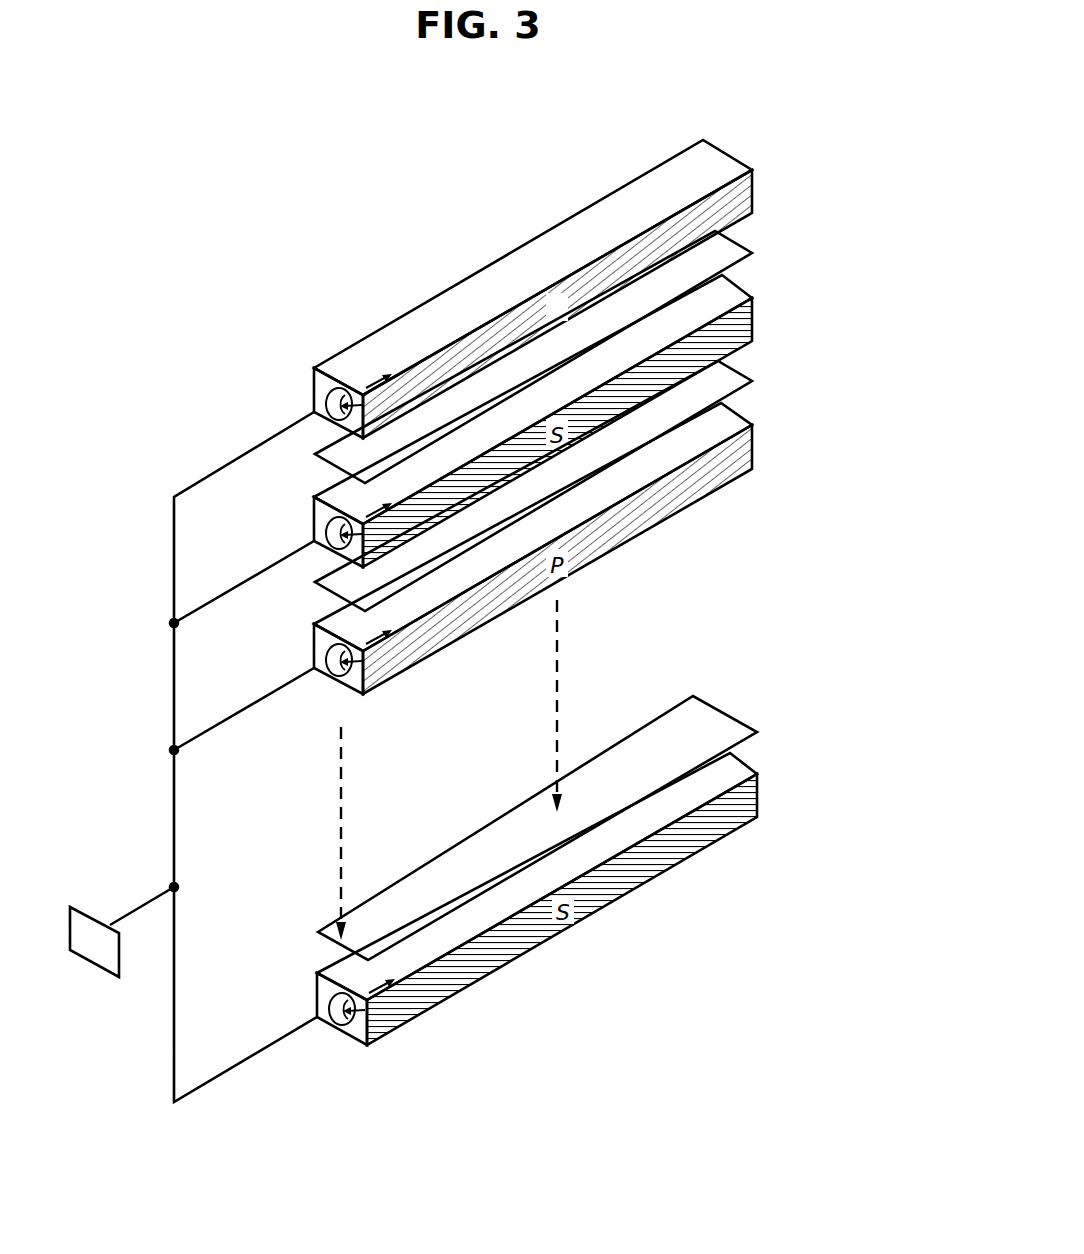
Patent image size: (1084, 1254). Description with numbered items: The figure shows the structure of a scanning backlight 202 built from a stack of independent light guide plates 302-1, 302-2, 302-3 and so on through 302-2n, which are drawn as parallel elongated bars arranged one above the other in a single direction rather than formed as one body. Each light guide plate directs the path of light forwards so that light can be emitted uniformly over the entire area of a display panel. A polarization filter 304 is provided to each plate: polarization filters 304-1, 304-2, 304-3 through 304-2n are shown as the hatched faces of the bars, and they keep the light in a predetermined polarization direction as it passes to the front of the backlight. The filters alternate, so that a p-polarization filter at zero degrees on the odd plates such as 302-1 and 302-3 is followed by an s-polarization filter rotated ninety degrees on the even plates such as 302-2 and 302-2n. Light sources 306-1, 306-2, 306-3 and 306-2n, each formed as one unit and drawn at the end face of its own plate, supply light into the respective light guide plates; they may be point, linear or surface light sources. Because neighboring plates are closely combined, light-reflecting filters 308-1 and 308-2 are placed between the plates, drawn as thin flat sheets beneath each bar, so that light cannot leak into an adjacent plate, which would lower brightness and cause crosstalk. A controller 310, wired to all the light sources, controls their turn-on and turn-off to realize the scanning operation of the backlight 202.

The scanning backlight 202 is at (346, 207).
The polarization filter 304 is at (505, 254).
The light guide plate 302-1 is at (723, 172).
The polarization filter 304-1 is at (748, 195).
The filter 308-1 is at (723, 255).
The light guide plate 302-2 is at (723, 300).
The polarization filter 304-2 is at (748, 322).
The filter 308-2 is at (723, 382).
The light guide plate 302-3 is at (723, 427).
The polarization filter 304-3 is at (748, 450).
The light guide plate 302-2n is at (728, 775).
The polarization filter 304-2n is at (750, 800).
The light source 306-1 is at (325, 395).
The light source 306-2 is at (325, 523).
The light source 306-3 is at (325, 650).
The light source 306-2n is at (328, 998).
The controller 310 is at (90, 963).